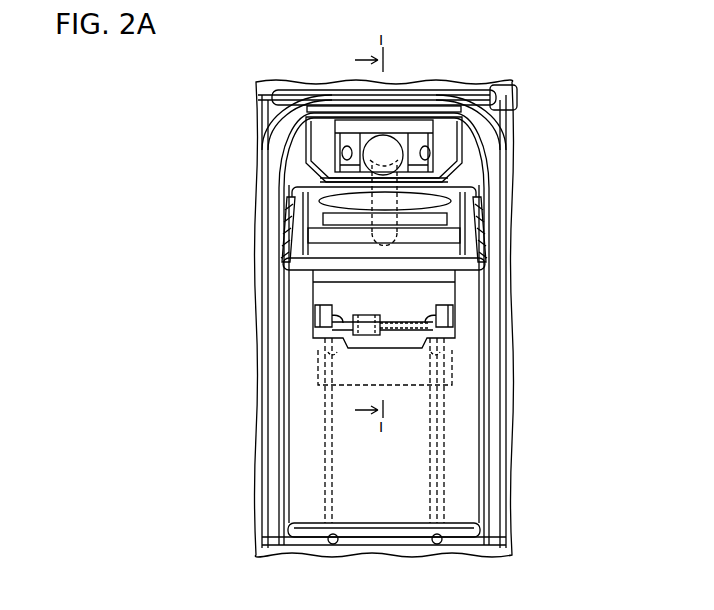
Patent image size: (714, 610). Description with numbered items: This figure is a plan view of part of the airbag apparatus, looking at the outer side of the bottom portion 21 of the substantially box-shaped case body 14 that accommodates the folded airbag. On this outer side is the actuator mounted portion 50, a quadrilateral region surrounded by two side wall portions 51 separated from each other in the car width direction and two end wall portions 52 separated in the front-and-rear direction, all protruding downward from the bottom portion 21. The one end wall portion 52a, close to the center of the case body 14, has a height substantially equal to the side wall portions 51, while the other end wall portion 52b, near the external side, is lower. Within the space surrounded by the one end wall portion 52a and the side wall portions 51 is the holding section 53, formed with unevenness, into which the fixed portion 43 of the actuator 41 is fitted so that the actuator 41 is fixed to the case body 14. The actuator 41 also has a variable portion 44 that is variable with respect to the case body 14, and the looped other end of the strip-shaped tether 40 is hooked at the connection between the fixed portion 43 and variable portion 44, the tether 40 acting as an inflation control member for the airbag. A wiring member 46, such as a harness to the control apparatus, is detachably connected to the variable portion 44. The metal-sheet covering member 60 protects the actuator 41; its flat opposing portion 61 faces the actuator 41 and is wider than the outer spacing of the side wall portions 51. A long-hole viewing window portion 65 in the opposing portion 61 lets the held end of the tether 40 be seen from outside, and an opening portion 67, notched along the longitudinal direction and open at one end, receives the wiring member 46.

The case body 14 is at (536, 70).
The bottom portion 21 is at (517, 101).
The tether 40 is at (410, 199).
The actuator 41 is at (470, 304).
The fixed portion 43 is at (430, 148).
The variable portion 44 is at (447, 347).
The wiring member 46 is at (450, 378).
The actuator mounted portion 50 is at (501, 271).
The side wall portion 51 is at (268, 321).
The end wall portion 52 is at (338, 97).
The one end wall portion 52a is at (414, 100).
The other end wall portion 52b is at (383, 549).
The holding section 53 is at (447, 163).
The covering member 60 is at (291, 72).
The opposing portion 61 is at (262, 152).
The viewing window portion 65 is at (297, 197).
The opening portion 67 is at (431, 500).